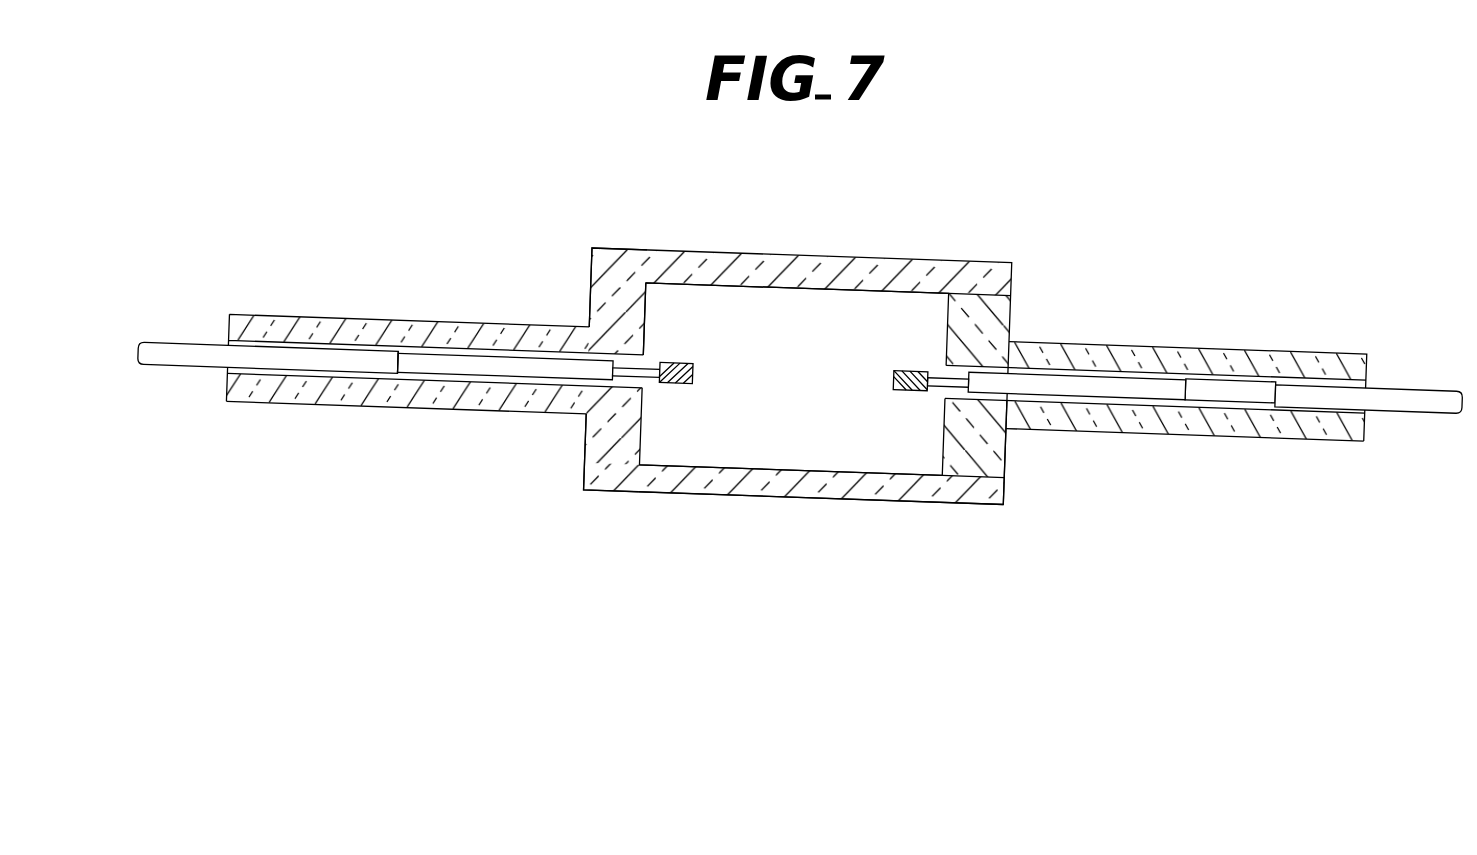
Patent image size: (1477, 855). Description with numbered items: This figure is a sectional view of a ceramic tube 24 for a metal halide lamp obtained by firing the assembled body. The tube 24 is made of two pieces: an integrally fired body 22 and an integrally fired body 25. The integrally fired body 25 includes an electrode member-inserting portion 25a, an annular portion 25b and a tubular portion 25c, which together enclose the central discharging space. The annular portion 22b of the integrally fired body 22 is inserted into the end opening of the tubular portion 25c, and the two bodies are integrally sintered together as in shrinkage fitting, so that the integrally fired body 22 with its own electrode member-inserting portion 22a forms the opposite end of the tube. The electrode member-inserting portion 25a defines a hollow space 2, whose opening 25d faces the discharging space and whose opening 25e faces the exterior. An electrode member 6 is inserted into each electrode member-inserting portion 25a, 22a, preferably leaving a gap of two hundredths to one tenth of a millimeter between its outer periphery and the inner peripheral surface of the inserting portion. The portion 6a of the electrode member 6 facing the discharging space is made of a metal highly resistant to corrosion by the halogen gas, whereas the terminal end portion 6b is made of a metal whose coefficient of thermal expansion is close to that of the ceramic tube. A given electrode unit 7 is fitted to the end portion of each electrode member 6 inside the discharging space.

The hollow space 2 is at (1283, 410).
The electrode member 6 is at (388, 341).
The portion facing the discharging space 6a is at (515, 357).
The terminal end portion 6b is at (307, 350).
The electrode unit 7 is at (682, 383).
The integrally fired body 22 is at (1204, 337).
The electrode member-inserting portion 22a is at (1188, 437).
The annular portion 22b is at (1005, 450).
The ceramic tube for a metal halide lamp 24 is at (1021, 244).
The integrally fired body 25 is at (569, 242).
The electrode member-inserting portion 25a is at (425, 401).
The annular portion 25b is at (584, 442).
The tubular portion 25c is at (787, 492).
The opening of the hollow space on the discharging space side 25d is at (655, 353).
The opening of the hollow space on the exterior side 25e is at (232, 341).